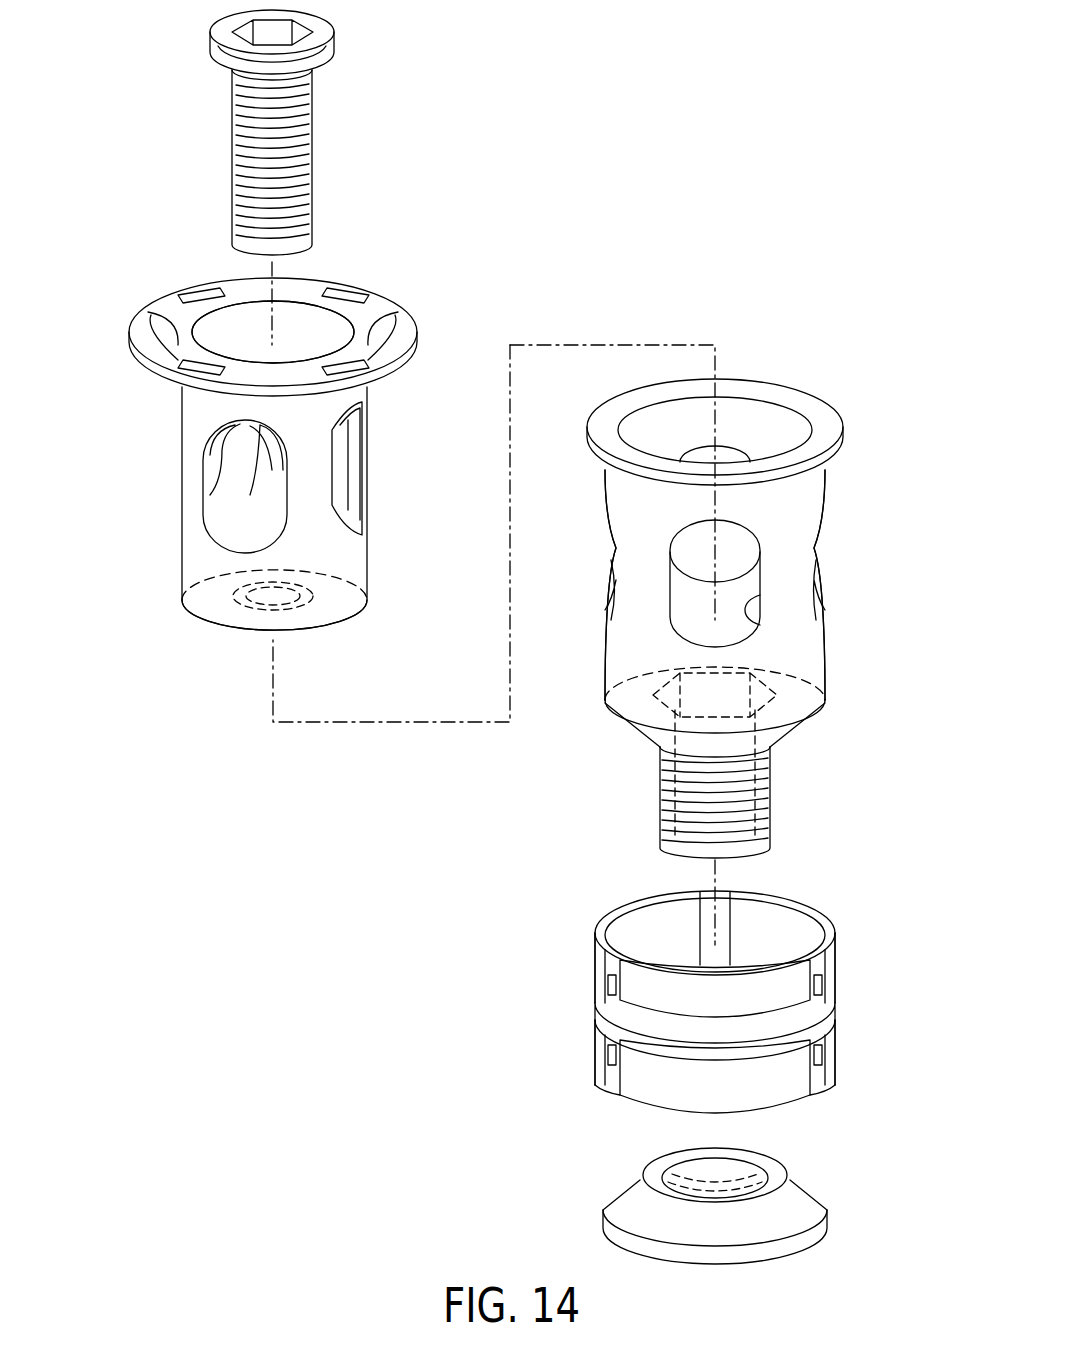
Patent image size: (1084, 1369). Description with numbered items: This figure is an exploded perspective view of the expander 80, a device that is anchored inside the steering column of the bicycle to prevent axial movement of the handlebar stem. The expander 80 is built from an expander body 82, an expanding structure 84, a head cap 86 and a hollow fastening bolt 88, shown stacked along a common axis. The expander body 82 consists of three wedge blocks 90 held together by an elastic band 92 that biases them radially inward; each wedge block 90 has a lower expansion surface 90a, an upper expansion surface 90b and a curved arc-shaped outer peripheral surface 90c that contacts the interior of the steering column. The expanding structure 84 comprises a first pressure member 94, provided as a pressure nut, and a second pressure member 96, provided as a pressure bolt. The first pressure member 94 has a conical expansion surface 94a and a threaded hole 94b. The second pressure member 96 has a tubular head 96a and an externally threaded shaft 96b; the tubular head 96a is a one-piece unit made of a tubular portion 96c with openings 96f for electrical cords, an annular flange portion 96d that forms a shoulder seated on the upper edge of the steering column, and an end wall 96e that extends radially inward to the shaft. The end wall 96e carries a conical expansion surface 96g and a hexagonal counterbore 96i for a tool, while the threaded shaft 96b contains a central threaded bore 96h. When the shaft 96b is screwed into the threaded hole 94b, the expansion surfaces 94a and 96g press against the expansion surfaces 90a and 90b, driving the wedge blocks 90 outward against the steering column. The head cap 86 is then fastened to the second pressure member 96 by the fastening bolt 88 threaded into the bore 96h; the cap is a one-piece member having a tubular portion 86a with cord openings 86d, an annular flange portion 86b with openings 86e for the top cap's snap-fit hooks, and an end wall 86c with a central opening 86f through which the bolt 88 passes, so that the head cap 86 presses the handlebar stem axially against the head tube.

The expander 80 is at (700, 233).
The expander body 82 is at (848, 1047).
The expanding structure 84 is at (503, 845).
The head cap 86 is at (406, 368).
The tubular portion 86a is at (182, 542).
The annular flange portion 86b is at (300, 290).
The end wall 86c is at (203, 615).
The openings 86d is at (152, 318).
The openings 86e is at (362, 470).
The centrally located opening 86f is at (300, 608).
The hollow fastening bolt 88 is at (232, 171).
The wedge blocks 90 is at (838, 970).
The lower expansion surface 90a is at (815, 1085).
The upper expansion surface 90b is at (780, 920).
The outer peripheral surface 90c is at (836, 992).
The elastic band 92 is at (710, 1045).
The first pressure member 94 is at (606, 1192).
The expansion surface 94a is at (795, 1200).
The threaded hole 94b is at (745, 1172).
The second pressure member 96 is at (606, 700).
The tubular head 96a is at (825, 637).
The externally threaded shaft 96b is at (770, 812).
The tubular portion 96c is at (800, 648).
The annular flange portion 96d is at (815, 408).
The end wall 96e is at (612, 668).
The openings 96f is at (746, 610).
The expansion surface 96g is at (775, 735).
The threaded bore 96h is at (812, 691).
The hexagonal counterbore 96i is at (645, 672).